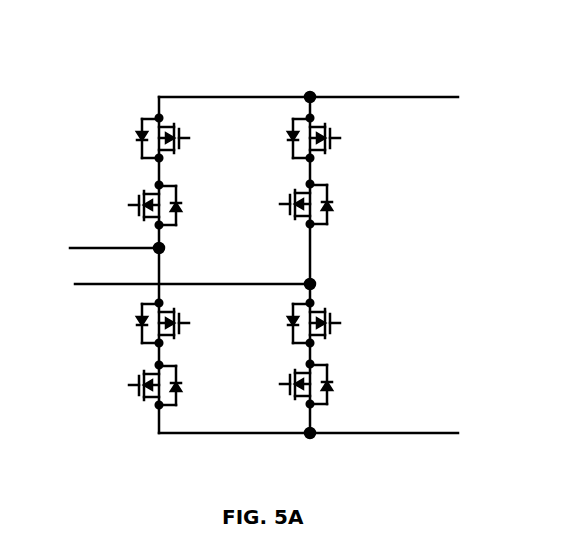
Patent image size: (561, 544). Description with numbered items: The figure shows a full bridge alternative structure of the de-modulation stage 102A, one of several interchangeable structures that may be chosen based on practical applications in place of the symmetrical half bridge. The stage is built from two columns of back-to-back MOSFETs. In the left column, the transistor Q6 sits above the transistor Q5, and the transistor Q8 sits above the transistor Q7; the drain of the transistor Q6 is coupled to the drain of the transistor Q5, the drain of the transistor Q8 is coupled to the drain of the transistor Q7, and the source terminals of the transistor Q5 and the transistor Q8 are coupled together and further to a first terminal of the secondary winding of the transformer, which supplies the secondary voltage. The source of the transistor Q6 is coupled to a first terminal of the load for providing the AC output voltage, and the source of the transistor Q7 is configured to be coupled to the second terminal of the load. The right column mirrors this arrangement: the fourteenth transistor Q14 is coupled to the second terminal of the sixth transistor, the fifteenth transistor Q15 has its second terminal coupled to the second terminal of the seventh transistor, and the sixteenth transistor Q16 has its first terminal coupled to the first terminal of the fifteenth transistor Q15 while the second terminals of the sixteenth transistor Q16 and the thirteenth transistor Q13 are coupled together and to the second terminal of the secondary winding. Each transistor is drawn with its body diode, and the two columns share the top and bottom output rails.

The de-modulation stage 102A is at (267, 228).
The transistor Q5 is at (169, 205).
The transistor Q6 is at (146, 138).
The transistor Q7 is at (170, 385).
The transistor Q8 is at (146, 323).
The thirteenth transistor Q13 is at (326, 204).
The fourteenth transistor Q14 is at (293, 138).
The fifteenth transistor Q15 is at (326, 384).
The sixteenth transistor Q16 is at (293, 323).